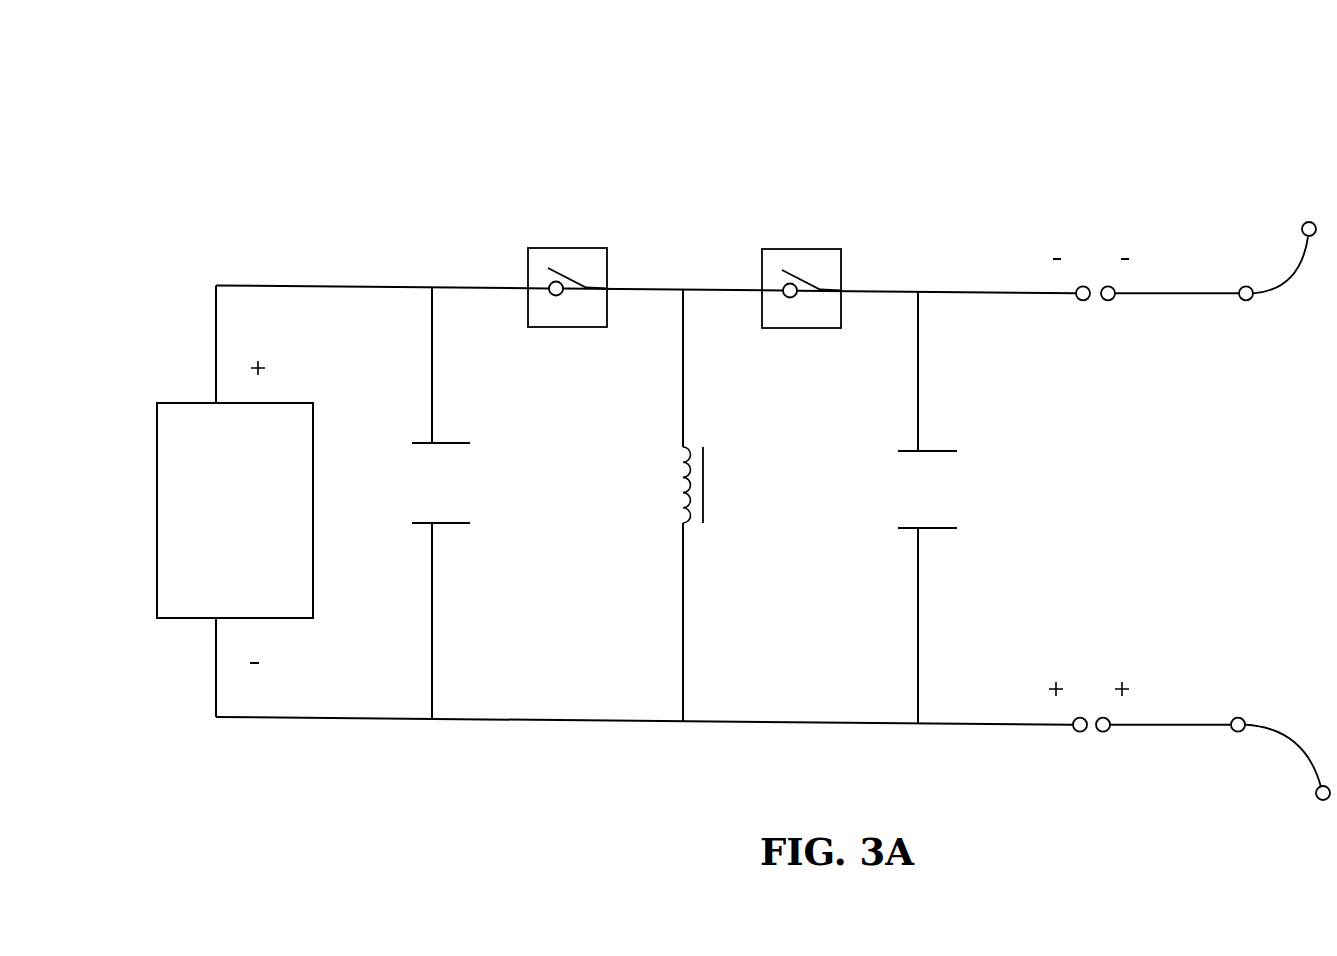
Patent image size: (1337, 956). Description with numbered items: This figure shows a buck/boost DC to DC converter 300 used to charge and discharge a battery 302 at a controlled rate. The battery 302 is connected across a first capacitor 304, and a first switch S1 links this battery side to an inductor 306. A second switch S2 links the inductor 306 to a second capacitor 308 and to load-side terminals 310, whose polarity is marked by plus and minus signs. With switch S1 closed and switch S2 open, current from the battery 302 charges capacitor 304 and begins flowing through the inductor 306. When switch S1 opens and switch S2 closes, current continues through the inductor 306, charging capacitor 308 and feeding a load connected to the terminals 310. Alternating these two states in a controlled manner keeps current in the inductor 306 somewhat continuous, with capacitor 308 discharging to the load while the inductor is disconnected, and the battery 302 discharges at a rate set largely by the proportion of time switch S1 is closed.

The DC to DC converter 300 is at (627, 110).
The battery 302 is at (138, 463).
The capacitor 304 is at (451, 545).
The inductor 306 is at (705, 547).
The capacitor 308 is at (937, 550).
The terminals 310 is at (1094, 232).
The switch S1 is at (569, 247).
The switch S2 is at (806, 247).